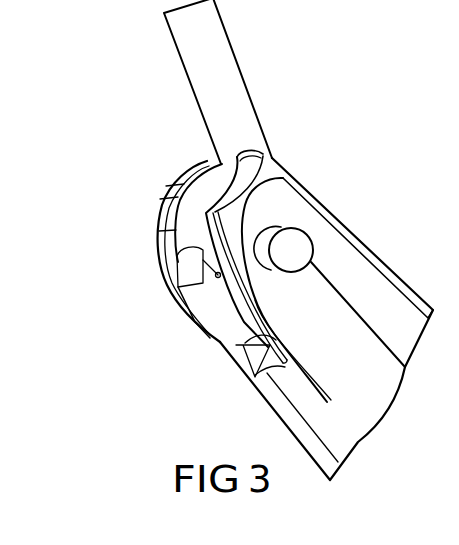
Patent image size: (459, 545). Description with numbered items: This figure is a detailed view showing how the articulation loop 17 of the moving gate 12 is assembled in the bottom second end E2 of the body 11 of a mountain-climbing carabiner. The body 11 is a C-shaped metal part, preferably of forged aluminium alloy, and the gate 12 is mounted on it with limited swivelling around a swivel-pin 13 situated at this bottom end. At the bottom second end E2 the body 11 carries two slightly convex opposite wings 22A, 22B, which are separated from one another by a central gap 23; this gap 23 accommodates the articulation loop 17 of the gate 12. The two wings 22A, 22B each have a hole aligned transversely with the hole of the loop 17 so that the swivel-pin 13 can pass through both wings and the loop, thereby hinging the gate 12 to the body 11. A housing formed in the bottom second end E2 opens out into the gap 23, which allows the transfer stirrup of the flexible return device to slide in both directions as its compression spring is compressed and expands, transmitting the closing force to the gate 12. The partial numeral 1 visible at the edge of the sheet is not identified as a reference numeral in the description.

The moving gate 12 is at (214, 80).
The wing 22B is at (250, 182).
The body 11 is at (326, 349).
The swivel-pin 13 is at (297, 248).
The wing 22A is at (178, 197).
The central gap 23 is at (198, 187).
The articulation loop 17 is at (202, 253).
The bottom second end E2 is at (223, 360).
The assembly 1 is at (455, 181).